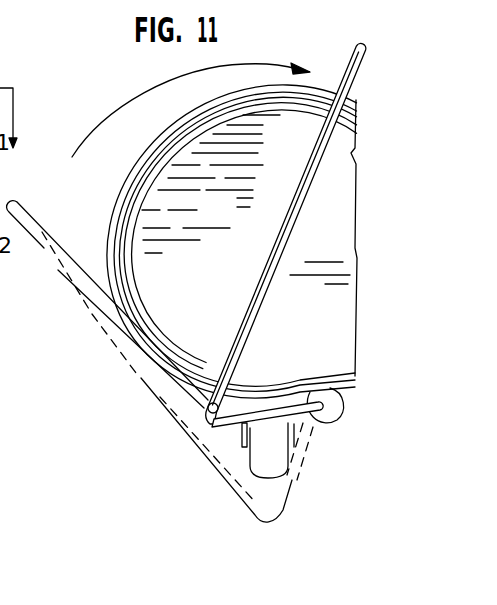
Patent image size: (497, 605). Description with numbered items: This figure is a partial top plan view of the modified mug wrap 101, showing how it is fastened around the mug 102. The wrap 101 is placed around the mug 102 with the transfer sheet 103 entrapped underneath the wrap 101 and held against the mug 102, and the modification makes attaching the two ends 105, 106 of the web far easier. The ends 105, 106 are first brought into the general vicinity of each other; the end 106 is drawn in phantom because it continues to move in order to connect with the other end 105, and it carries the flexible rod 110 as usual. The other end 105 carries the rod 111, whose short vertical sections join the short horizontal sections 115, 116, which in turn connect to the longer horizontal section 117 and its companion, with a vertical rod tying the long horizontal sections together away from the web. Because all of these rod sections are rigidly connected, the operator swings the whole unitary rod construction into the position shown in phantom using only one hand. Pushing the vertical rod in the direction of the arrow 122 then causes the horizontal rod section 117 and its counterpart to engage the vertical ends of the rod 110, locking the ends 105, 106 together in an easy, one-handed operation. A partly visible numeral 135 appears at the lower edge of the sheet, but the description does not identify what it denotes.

The mug wrap 101 is at (106, 304).
The mug 102 is at (143, 292).
The transfer sheet 103 is at (144, 208).
The end of the web 105 is at (355, 378).
The end of the web 106 is at (178, 412).
The flexible rod 110 is at (160, 375).
The rod 111 is at (304, 384).
The short horizontal section 115 is at (250, 403).
The short horizontal section 116 is at (58, 270).
The long horizontal section 117 is at (287, 221).
The arrow 122 is at (128, 104).
The lower element 135 is at (174, 599).